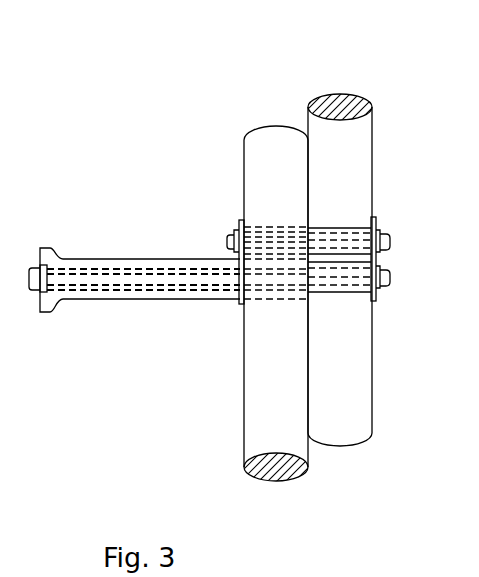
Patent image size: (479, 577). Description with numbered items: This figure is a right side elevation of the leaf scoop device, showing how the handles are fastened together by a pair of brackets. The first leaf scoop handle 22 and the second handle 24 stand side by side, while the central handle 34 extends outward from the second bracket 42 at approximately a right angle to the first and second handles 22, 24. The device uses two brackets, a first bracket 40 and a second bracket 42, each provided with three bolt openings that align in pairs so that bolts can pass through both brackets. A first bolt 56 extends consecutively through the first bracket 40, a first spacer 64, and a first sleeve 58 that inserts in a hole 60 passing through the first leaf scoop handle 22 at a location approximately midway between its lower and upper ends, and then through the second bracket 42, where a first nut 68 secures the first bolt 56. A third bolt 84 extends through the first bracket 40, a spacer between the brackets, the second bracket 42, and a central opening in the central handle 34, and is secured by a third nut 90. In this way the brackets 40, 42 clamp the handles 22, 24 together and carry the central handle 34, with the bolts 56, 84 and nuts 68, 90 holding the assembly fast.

The first leaf scoop handle 22 is at (243, 166).
The second handle 24 is at (372, 135).
The central handle 34 is at (134, 302).
The first bracket 40 is at (376, 302).
The second bracket 42 is at (240, 304).
The first bolt 56 is at (390, 237).
The first sleeve 58 is at (273, 227).
The hole 60 is at (262, 226).
The first spacer 64 is at (348, 228).
The first nut 68 is at (226, 242).
The third bolt 84 is at (390, 278).
The third nut 90 is at (35, 268).